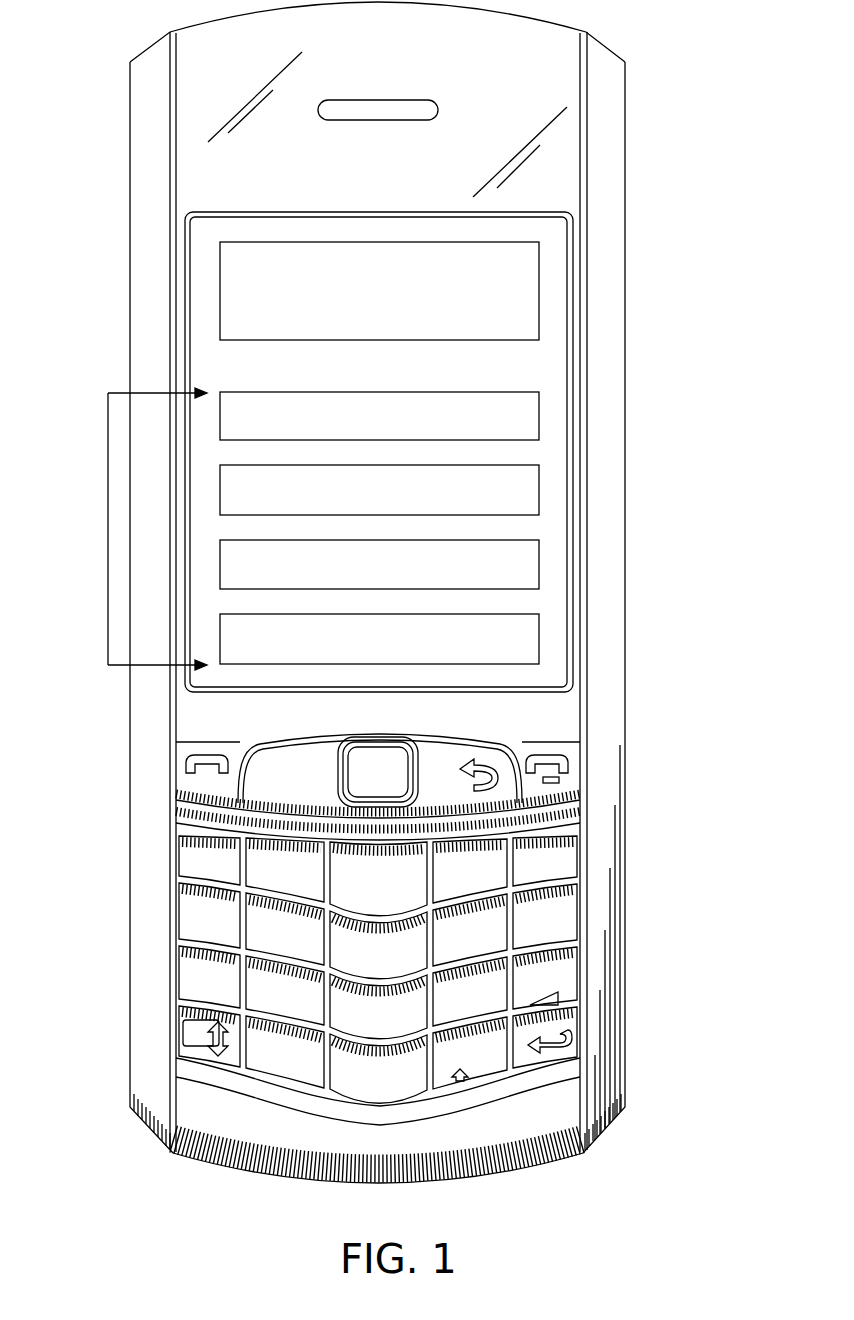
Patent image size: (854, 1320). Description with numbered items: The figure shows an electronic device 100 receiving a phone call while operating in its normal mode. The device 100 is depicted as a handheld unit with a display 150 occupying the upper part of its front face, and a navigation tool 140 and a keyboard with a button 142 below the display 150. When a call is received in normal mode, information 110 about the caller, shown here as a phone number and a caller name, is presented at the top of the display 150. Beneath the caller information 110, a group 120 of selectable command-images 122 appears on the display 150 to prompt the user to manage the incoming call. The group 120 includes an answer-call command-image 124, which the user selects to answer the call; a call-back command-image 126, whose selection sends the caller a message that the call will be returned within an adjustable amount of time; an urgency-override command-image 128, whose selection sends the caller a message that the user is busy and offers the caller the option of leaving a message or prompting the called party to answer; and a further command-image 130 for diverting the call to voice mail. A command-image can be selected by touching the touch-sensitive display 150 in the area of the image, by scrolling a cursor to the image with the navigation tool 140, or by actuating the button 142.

The electronic device 100 is at (403, 63).
The information about the caller 110 is at (541, 259).
The group of selectable command-images 120 is at (107, 535).
The selectable command-images 122 is at (541, 403).
The answer-call command-image 124 is at (541, 394).
The call-back command-image 126 is at (541, 472).
The urgency-override command-image 128 is at (541, 543).
The divert to voice mail option 130 is at (541, 617).
The navigation tool 140 is at (370, 768).
The button 142 is at (553, 1042).
The display 150 is at (202, 226).